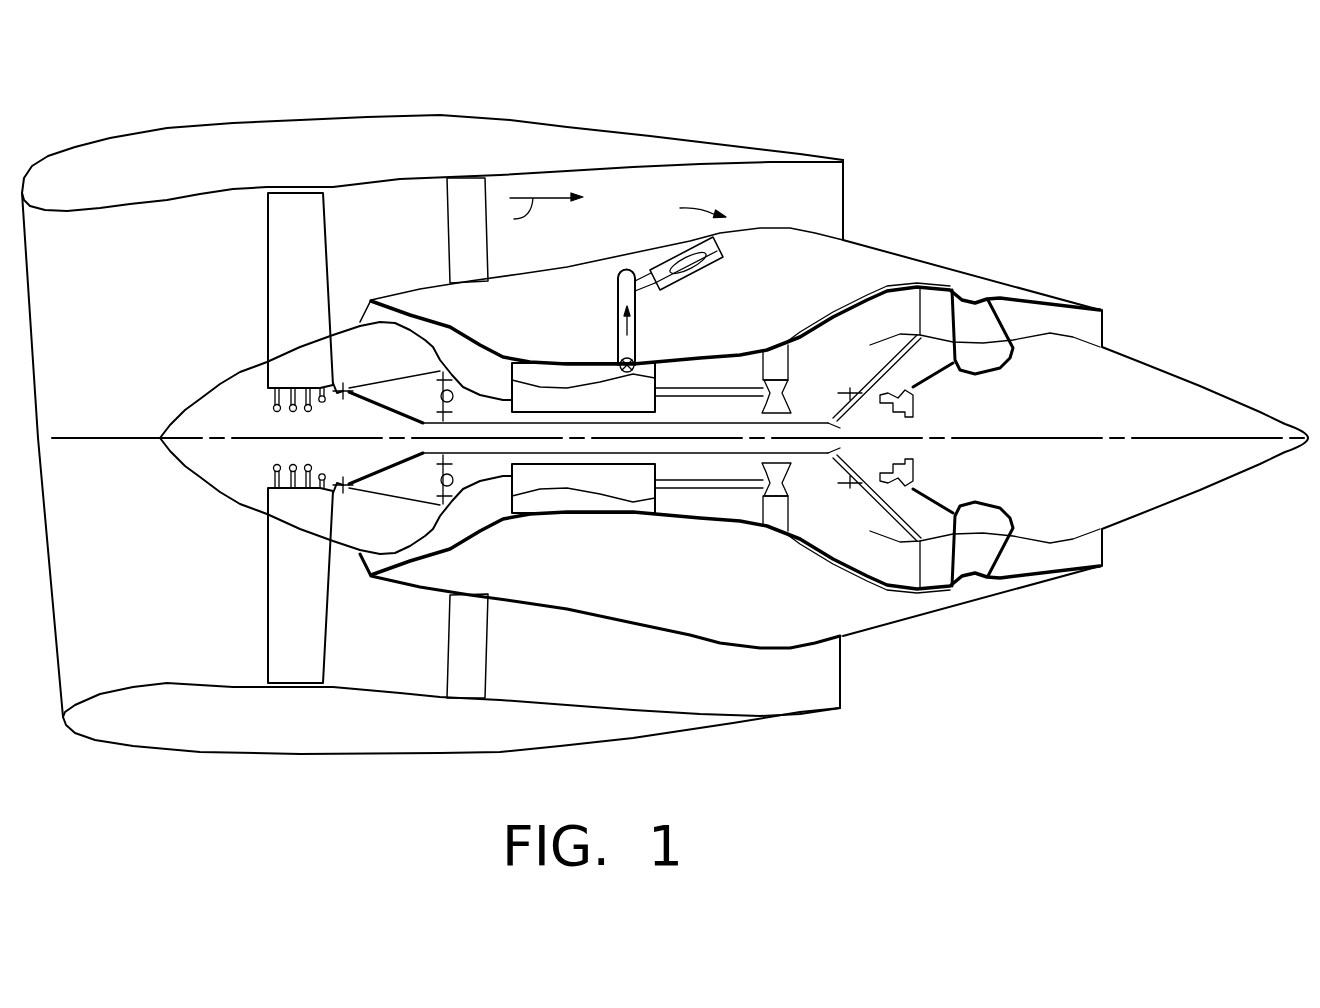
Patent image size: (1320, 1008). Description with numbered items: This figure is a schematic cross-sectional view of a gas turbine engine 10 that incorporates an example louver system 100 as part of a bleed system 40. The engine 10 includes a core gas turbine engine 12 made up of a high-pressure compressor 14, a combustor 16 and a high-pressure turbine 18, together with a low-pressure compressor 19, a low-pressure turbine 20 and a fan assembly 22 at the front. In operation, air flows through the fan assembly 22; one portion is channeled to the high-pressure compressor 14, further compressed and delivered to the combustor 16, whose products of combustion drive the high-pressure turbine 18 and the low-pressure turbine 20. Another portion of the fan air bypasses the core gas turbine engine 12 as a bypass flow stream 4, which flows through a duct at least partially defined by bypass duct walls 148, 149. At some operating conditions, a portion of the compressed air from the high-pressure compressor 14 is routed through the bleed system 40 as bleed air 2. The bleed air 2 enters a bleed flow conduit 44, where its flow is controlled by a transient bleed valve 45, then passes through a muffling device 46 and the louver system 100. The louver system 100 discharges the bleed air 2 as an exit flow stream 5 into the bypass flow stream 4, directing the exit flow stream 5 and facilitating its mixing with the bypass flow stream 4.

The gas turbine engine 10 is at (730, 86).
The bypass duct wall 149 is at (729, 172).
The louver system 100 is at (748, 217).
The bypass duct wall 148 is at (812, 238).
The core gas turbine engine 12 is at (978, 274).
The bypass flow stream 4 is at (540, 213).
The exit flow stream 5 is at (694, 213).
The bleed system 40 is at (684, 293).
The muffling device 46 is at (722, 257).
The bleed flow conduit 44 is at (621, 330).
The bleed air 2 is at (635, 322).
The transient bleed valve 45 is at (634, 357).
The fan assembly 22 is at (240, 595).
The low-pressure compressor 19 is at (440, 566).
The high-pressure compressor 14 is at (580, 524).
The combustor 16 is at (716, 536).
The high-pressure turbine 18 is at (775, 543).
The low-pressure turbine 20 is at (882, 603).